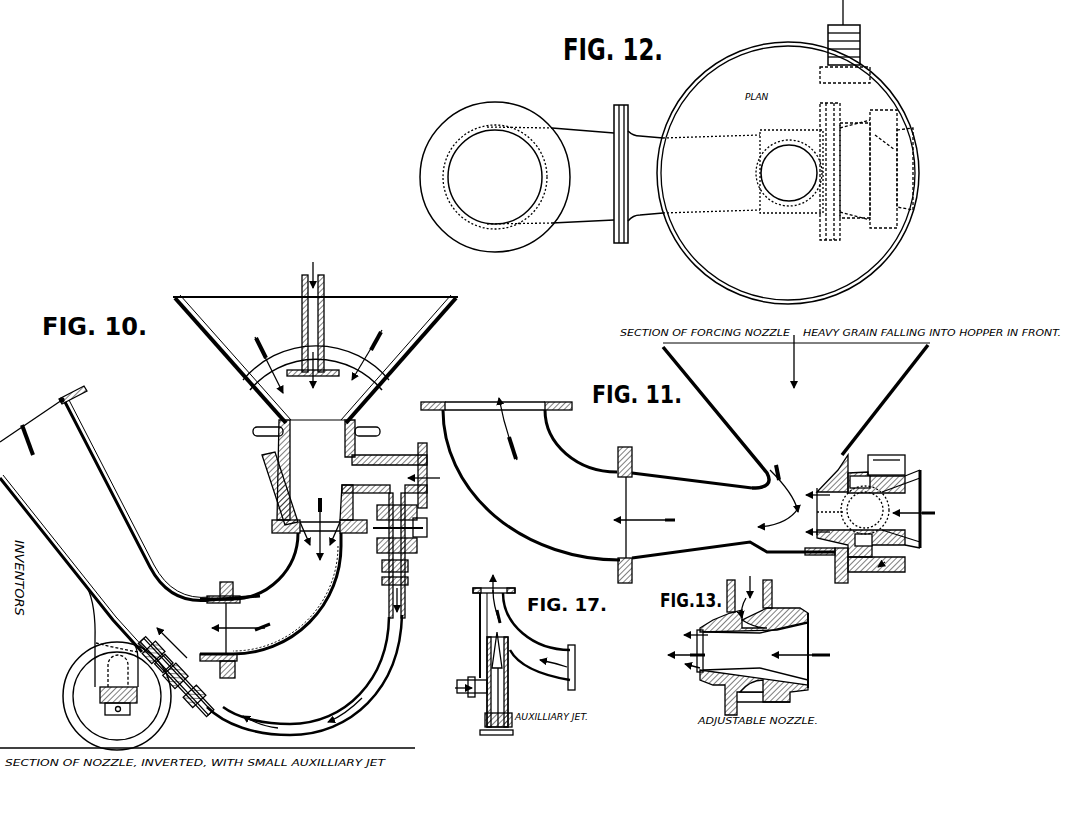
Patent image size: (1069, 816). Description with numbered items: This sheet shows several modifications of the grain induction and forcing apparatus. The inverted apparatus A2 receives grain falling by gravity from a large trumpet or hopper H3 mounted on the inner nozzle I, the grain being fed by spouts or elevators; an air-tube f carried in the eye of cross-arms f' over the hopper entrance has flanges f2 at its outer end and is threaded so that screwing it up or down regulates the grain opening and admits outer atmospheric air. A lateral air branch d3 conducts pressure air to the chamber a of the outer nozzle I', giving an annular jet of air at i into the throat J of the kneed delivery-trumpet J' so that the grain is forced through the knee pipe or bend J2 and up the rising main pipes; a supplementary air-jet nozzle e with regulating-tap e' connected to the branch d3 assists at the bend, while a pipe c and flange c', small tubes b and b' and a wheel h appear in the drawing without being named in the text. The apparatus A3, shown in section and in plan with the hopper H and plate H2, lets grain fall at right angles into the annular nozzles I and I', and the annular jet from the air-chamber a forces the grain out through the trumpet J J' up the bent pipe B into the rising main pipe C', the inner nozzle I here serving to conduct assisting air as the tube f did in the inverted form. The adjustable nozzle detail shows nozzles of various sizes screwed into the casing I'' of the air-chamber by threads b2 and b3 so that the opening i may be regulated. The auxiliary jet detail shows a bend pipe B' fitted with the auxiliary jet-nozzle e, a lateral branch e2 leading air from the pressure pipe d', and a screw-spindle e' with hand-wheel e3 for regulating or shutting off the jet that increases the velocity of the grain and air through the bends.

In FIG. 10, the trumpet or hopper H3 is at (315, 359).
In FIG. 10, the air-tube f is at (313, 325).
In FIG. 11, the air-tube f is at (908, 509).
In FIG. 13, the air-tube f is at (795, 650).
In FIG. 10, the cross-arms f' is at (316, 361).
In FIG. 10, the flanges f2 is at (316, 374).
In FIG. 10, the inner nozzle I is at (316, 470).
In FIG. 11, the inner nozzle I is at (865, 528).
In FIG. 13, the inner nozzle I is at (744, 649).
In FIG. 10, the outer nozzle I' is at (319, 529).
In FIG. 11, the outer nozzle I' is at (826, 519).
In FIG. 13, the outer nozzle I' is at (688, 650).
In FIG. 12, the casing of the air-chamber I'' is at (873, 171).
In FIG. 11, the casing of the air-chamber I'' is at (873, 571).
In FIG. 13, the casing of the air-chamber I'' is at (763, 708).
In FIG. 10, the side inlet tube b is at (268, 441).
In FIG. 11, the side inlet tube b is at (886, 458).
In FIG. 10, the side inlet tube b' is at (367, 429).
In FIG. 13, the thread b2 is at (741, 605).
In FIG. 13, the thread b3 is at (756, 594).
In FIG. 10, the air-chamber a is at (344, 488).
In FIG. 11, the air-chamber a is at (861, 522).
In FIG. 13, the air-chamber a is at (754, 660).
In FIG. 10, the lateral air branch d3 is at (391, 475).
In FIG. 12, the lateral air branch d3 is at (845, 120).
In FIG. 12, the air-pressure pipe d' is at (876, 169).
In FIG. 10, the supplementary air-jet nozzle e is at (175, 673).
In FIG. 10, the regulating-tap or screw-spindle e' is at (405, 555).
In FIG. 17, the regulating-tap or screw-spindle e' is at (499, 679).
In FIG. 17, the lateral branch e2 is at (471, 682).
In FIG. 17, the hand-wheel e3 is at (504, 726).
In FIG. 10, the annular jet opening i is at (320, 525).
In FIG. 10, the air pipe c is at (304, 675).
In FIG. 10, the outlet flange c' is at (235, 629).
In FIG. 10, the throat of the delivery-trumpet J is at (270, 593).
In FIG. 12, the throat of the delivery-trumpet J is at (777, 171).
In FIG. 11, the throat of the delivery-trumpet J is at (779, 502).
In FIG. 10, the delivery-trumpet J' is at (32, 433).
In FIG. 12, the delivery-trumpet J' is at (575, 174).
In FIG. 11, the delivery-trumpet J' is at (644, 515).
In FIG. 10, the knee pipe or bend J2 is at (130, 536).
In FIG. 10, the grain induction and forcing apparatus A2 is at (191, 542).
In FIG. 12, the grain induction and forcing apparatus A3 is at (708, 157).
In FIG. 11, the grain induction and forcing apparatus A3 is at (733, 502).
In FIG. 12, the bent grain-conveying pipe B is at (495, 177).
In FIG. 11, the bent grain-conveying pipe B is at (531, 485).
In FIG. 17, the bend of grain-transmitting pipe B' is at (524, 632).
In FIG. 11, the rising main pipe C' is at (496, 422).
In FIG. 11, the hopper H is at (796, 415).
In FIG. 12, the hopper plate H2 is at (788, 173).
In FIG. 10, the wheel h is at (117, 696).